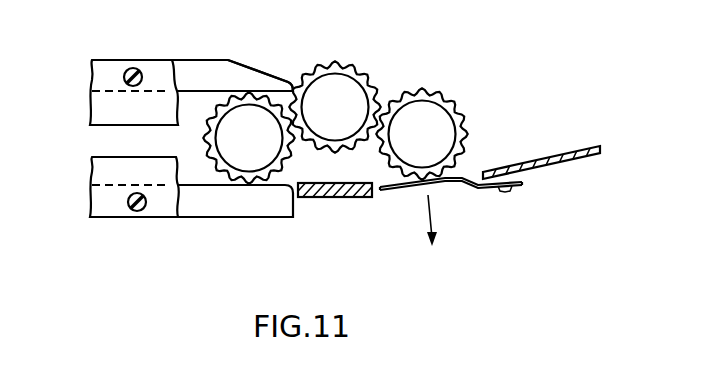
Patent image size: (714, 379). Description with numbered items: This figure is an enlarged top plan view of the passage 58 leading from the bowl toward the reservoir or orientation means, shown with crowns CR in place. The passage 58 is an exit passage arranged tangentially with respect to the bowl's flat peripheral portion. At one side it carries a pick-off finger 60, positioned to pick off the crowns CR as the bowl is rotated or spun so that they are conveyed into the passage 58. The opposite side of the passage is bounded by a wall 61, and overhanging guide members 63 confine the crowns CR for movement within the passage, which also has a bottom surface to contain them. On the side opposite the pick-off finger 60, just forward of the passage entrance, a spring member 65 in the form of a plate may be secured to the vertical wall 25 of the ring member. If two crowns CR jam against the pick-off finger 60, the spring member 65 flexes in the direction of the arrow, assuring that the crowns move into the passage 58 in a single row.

The passage 58 is at (195, 118).
The pick-off finger 60 is at (250, 77).
The wall 61 is at (213, 207).
The overhanging guide members 63 is at (95, 162).
The crimping roller CR is at (432, 118).
The spring member 65 is at (408, 187).
The vertical wall 25 is at (580, 158).